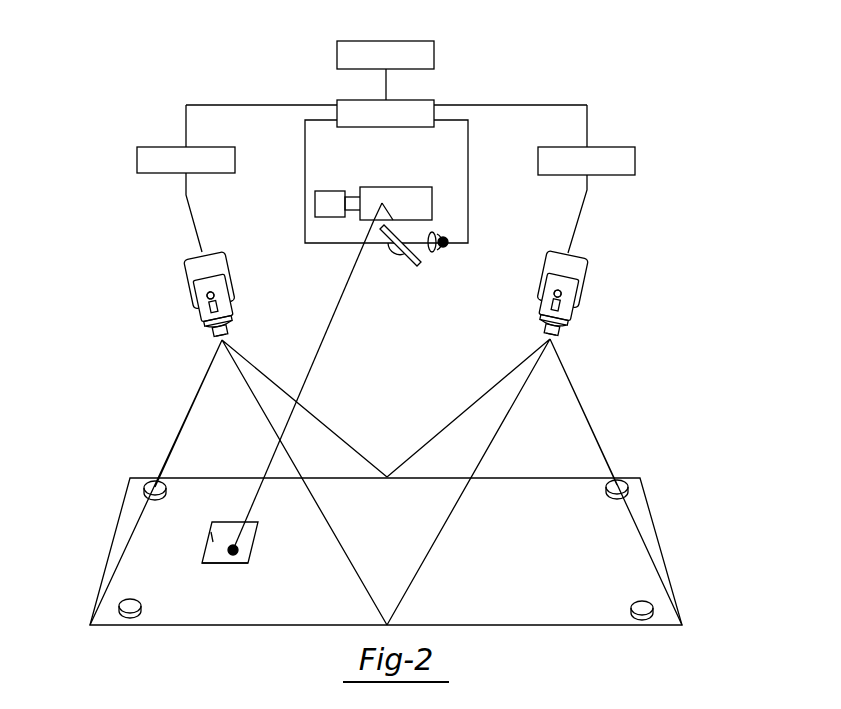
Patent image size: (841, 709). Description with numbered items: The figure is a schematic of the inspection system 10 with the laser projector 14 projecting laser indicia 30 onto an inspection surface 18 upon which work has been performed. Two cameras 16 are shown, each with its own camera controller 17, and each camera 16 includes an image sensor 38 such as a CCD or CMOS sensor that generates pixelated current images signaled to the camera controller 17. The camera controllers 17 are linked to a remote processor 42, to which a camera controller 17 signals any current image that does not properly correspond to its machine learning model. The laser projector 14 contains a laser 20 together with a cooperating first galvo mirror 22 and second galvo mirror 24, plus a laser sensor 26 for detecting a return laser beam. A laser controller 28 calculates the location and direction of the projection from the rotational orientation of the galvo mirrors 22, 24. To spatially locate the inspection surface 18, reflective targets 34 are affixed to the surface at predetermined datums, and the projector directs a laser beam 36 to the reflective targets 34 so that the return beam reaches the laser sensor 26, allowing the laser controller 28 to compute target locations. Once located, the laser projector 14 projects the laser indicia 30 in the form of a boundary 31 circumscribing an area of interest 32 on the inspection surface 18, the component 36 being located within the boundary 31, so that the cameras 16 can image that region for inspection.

The inspection system 10 is at (105, 150).
The laser projector 14 is at (471, 178).
The camera 16 is at (198, 310).
The camera controller 17 is at (166, 147).
The inspection surface 18 is at (509, 553).
The laser 20 is at (440, 252).
The first galvo mirror 22 is at (409, 259).
The second galvo mirror 24 is at (395, 216).
The laser sensor 26 is at (447, 249).
The laser controller 28 is at (420, 100).
The laser indicia 30 is at (255, 550).
The boundary 31 is at (216, 565).
The area of interest 32 is at (210, 536).
The reflective target 34 is at (146, 480).
The laser beam 36 is at (121, 599).
The image sensor 38 is at (222, 308).
The remote processor 42 is at (420, 41).